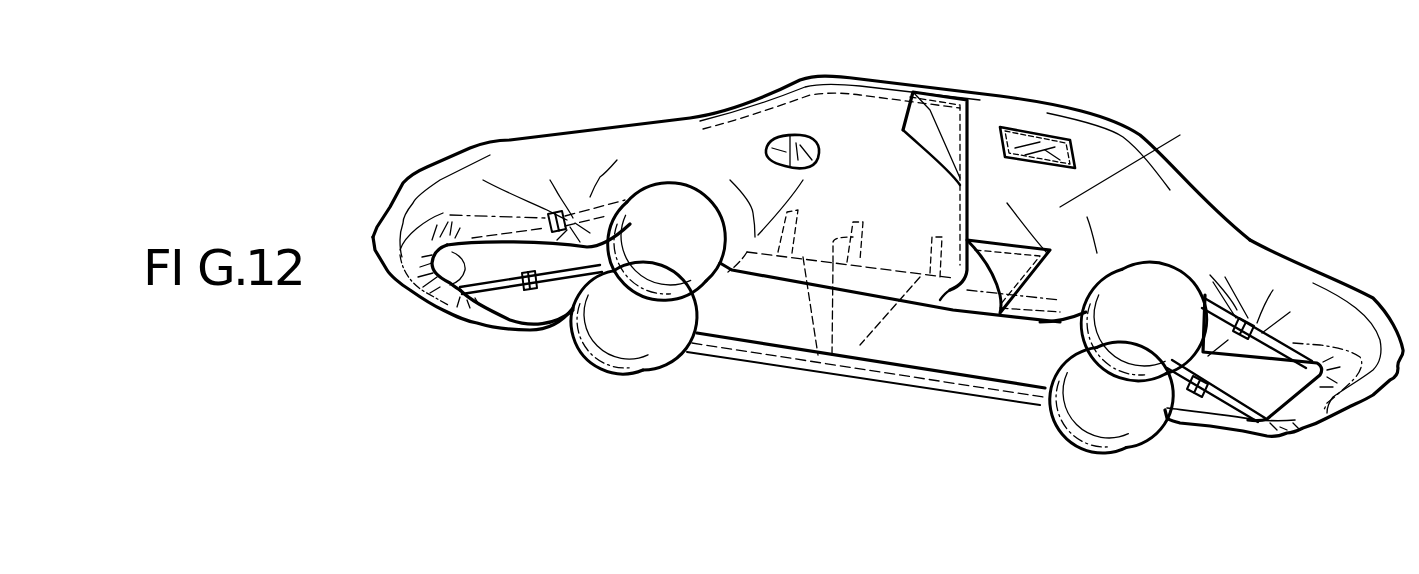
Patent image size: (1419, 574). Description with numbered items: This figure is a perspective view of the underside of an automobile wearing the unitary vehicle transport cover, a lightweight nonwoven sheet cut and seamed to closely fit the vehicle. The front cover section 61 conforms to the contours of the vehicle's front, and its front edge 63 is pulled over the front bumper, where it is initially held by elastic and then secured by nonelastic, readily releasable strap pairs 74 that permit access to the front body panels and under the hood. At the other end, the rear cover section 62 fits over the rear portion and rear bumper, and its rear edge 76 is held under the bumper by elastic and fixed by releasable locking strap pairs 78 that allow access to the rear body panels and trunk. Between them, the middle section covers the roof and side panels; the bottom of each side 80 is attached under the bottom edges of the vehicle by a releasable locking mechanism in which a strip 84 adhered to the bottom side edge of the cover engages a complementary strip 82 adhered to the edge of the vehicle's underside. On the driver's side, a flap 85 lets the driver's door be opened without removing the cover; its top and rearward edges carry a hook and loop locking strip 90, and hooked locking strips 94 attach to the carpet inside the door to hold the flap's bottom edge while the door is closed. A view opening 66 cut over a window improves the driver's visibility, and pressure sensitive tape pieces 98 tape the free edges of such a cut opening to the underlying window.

The front cover section 61 is at (498, 127).
The rear cover section 62 is at (1347, 283).
The front edge 63 is at (445, 308).
The view opening 66 is at (1020, 133).
The strap pairs 74 is at (560, 220).
The rear edge 76 is at (1295, 398).
The locking strap pairs 78 is at (1238, 318).
The side of the middle section 80 is at (1138, 163).
The complementary strip 82 is at (965, 300).
The strip 84 is at (957, 330).
The flap 85 is at (861, 118).
The hook and loop locking strip 90 is at (946, 97).
The hooked locking strips 94 is at (818, 360).
The pressure sensitive tape pieces 98 is at (1073, 148).